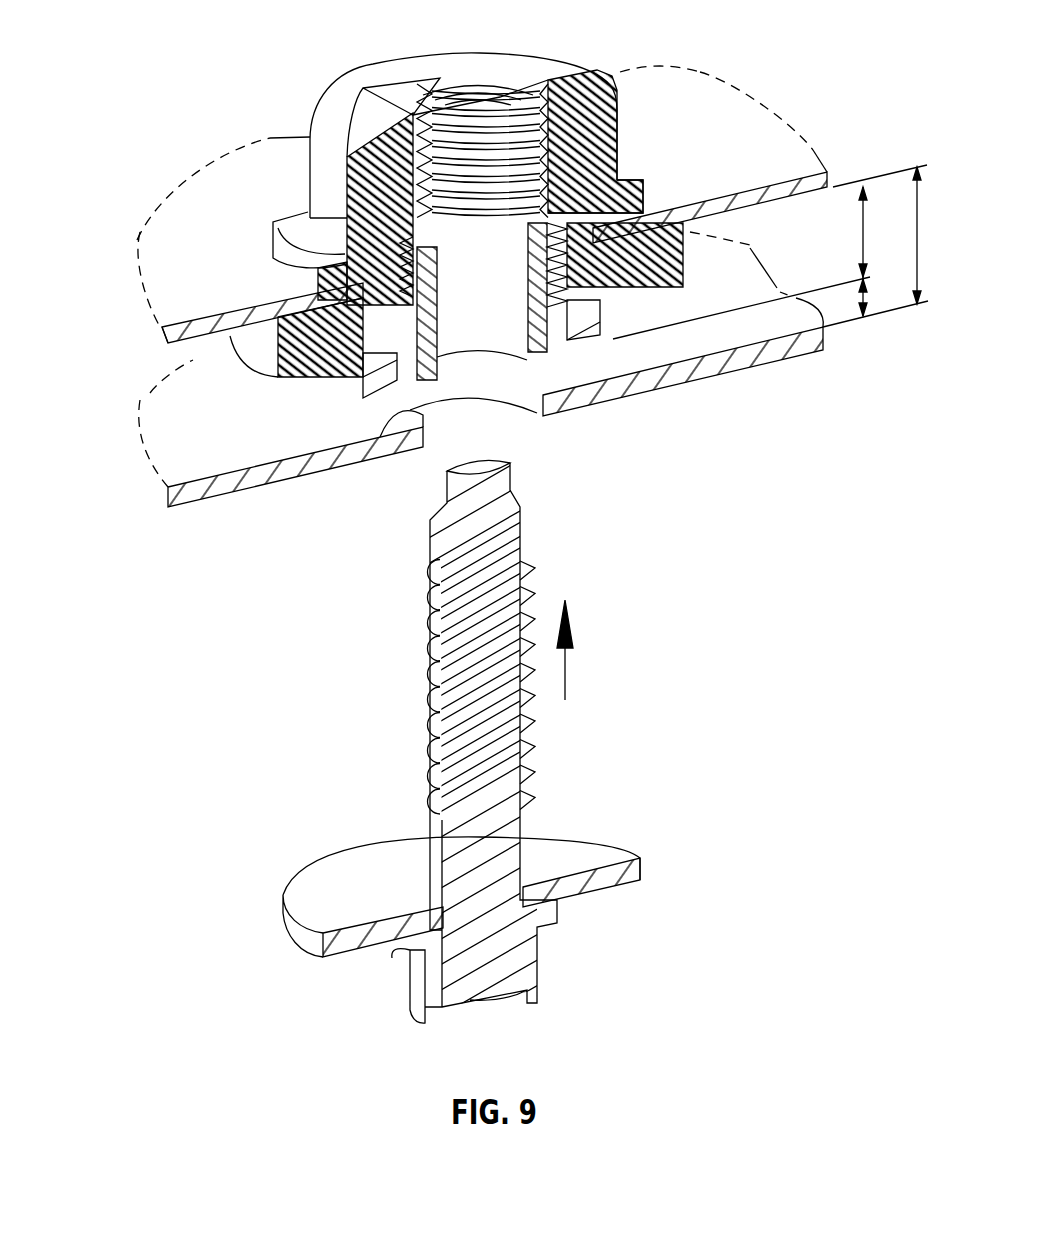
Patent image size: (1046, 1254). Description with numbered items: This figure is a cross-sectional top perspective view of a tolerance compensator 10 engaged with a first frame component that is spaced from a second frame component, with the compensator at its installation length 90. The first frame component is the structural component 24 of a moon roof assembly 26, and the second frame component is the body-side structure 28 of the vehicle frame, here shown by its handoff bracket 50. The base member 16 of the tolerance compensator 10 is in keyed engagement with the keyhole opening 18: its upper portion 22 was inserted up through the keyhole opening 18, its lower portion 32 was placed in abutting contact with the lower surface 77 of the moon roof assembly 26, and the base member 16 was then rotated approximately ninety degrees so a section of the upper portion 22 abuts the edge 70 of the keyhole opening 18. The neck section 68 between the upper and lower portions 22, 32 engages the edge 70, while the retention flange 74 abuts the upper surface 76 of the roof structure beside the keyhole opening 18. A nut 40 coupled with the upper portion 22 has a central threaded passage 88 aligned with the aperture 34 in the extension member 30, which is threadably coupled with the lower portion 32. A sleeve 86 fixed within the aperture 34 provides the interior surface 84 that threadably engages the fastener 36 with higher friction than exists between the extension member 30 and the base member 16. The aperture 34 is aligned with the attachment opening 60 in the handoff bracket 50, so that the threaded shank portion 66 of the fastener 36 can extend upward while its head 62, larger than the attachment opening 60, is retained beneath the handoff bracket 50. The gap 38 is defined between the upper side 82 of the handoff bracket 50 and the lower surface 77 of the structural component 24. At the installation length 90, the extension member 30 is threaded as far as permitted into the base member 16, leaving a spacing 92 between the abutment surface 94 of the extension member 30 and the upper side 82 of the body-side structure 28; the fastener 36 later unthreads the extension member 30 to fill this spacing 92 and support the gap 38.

The tolerance compensator 10 is at (156, 50).
The base member 16 is at (617, 125).
The keyhole opening 18 is at (318, 292).
The upper portion 22 is at (615, 166).
The structural component 24 is at (752, 125).
The moon roof assembly 26 is at (150, 240).
The body-side structure 28 is at (150, 400).
The extension member 30 is at (600, 342).
The lower portion 32 is at (686, 256).
The aperture 34 is at (487, 350).
The fastener 36 is at (355, 766).
The gap 38 is at (917, 227).
The nut 40 is at (517, 73).
The handoff bracket 50 is at (730, 348).
The attachment opening 60 is at (393, 410).
The head 62 is at (372, 978).
The threaded shank portion 66 is at (405, 671).
The neck section 68 is at (366, 373).
The edge 70 is at (640, 215).
The retention flange 74 is at (292, 222).
The upper surface 76 is at (202, 271).
The lower surface 77 is at (207, 362).
The upper side 82 is at (202, 433).
The interior surface 84 is at (472, 253).
The sleeve 86 is at (543, 355).
The central threaded passage 88 is at (497, 90).
The installation length 90 is at (862, 220).
The spacing 92 is at (864, 300).
The abutment surface 94 is at (612, 352).